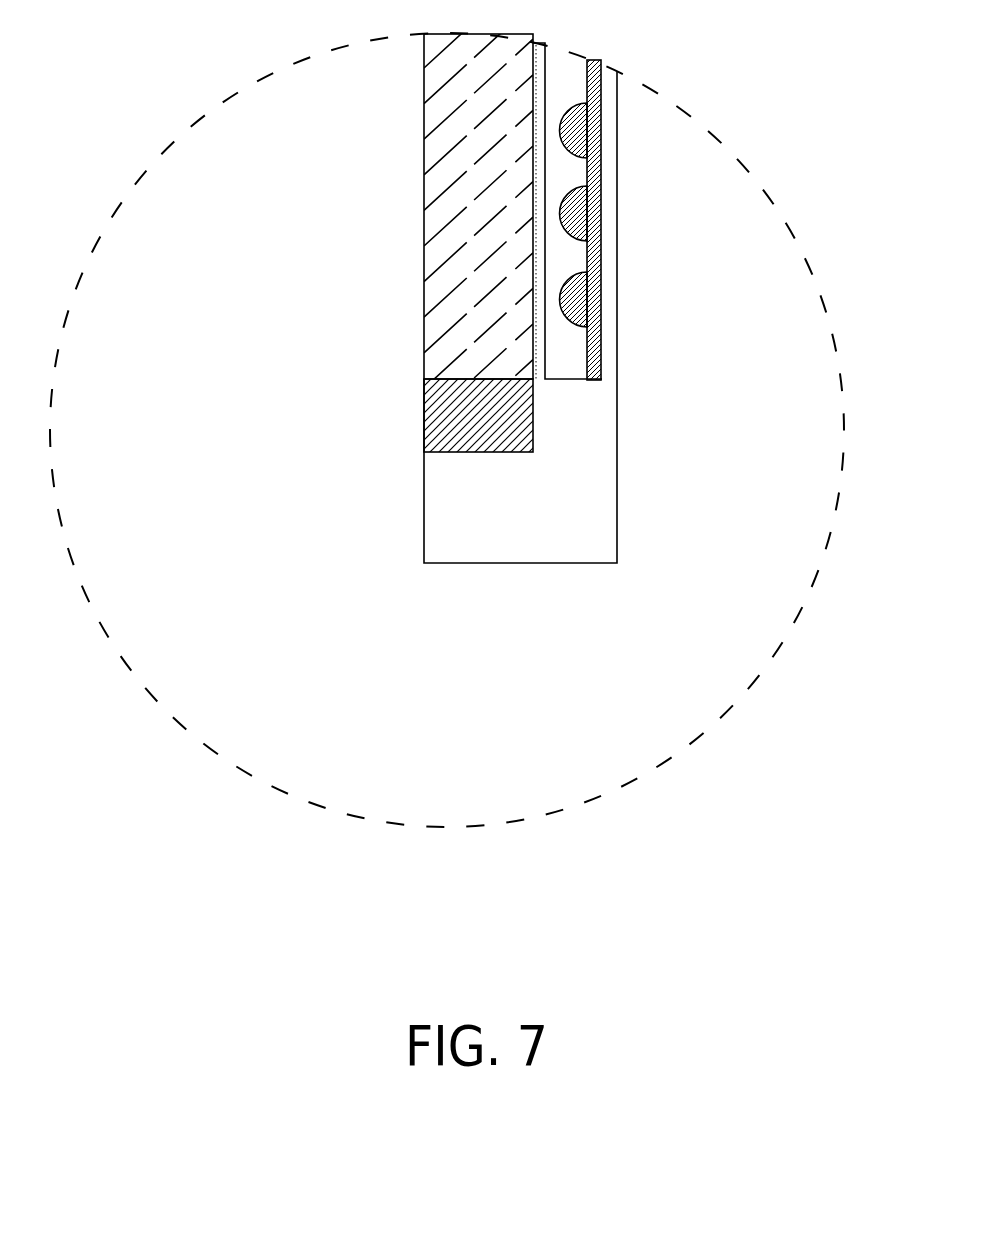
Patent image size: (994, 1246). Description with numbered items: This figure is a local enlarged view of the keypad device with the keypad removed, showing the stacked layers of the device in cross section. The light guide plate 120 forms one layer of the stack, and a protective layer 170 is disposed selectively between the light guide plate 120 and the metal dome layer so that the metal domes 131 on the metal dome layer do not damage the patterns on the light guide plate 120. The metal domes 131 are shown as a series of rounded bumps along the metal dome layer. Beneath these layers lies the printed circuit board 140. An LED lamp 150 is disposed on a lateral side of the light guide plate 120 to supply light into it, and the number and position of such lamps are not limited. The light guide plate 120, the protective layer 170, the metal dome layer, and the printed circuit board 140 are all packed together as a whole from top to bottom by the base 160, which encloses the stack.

The light guide plate 120 is at (437, 273).
The metal domes 131 is at (583, 307).
The printed circuit board 140 is at (601, 111).
The LED lamps 150 is at (423, 423).
The base 160 is at (437, 533).
The protective layer 170 is at (535, 353).